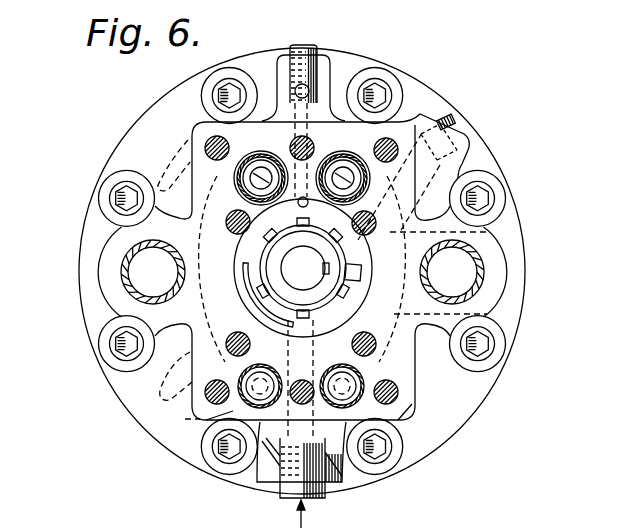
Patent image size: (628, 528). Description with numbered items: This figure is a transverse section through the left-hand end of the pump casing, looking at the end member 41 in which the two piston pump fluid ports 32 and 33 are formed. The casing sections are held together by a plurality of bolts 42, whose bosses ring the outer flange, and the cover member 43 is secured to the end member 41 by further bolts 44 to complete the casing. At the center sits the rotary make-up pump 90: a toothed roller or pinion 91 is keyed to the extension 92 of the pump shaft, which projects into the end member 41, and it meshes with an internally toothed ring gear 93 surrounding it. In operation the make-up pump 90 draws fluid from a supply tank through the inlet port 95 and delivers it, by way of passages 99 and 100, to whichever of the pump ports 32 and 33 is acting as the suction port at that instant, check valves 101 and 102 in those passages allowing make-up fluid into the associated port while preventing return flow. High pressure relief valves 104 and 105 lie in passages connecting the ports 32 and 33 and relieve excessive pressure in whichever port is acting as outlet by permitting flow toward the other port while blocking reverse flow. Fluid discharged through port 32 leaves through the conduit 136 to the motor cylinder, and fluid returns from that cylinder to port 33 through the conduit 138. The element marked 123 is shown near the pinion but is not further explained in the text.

The fluid port 32 is at (178, 378).
The fluid port 33 is at (200, 258).
The end member 41 is at (437, 103).
The bolts 42 is at (124, 190).
The cover member 43 is at (405, 152).
The bolts 44 is at (229, 145).
The rotary make-up pump 90 is at (243, 283).
The toothed roller or pinion 91 is at (288, 238).
The extension of the pump shaft 92 is at (305, 268).
The internally toothed ring or ring gear 93 is at (365, 283).
The inlet port 95 is at (349, 278).
The passage 99 is at (334, 306).
The passage 100 is at (178, 419).
The check valve 101 is at (412, 406).
The check valve 102 is at (233, 411).
The high pressure relief valve 104 is at (250, 177).
The high pressure relief valve 105 is at (333, 180).
The pin 123 is at (310, 204).
The conduit 136 is at (484, 277).
The conduit 138 is at (122, 277).